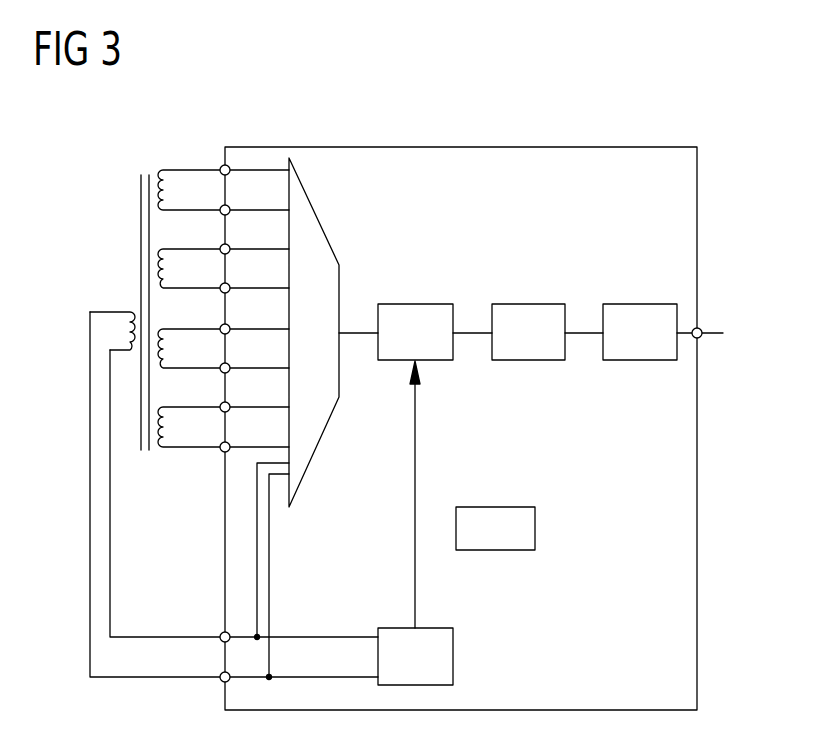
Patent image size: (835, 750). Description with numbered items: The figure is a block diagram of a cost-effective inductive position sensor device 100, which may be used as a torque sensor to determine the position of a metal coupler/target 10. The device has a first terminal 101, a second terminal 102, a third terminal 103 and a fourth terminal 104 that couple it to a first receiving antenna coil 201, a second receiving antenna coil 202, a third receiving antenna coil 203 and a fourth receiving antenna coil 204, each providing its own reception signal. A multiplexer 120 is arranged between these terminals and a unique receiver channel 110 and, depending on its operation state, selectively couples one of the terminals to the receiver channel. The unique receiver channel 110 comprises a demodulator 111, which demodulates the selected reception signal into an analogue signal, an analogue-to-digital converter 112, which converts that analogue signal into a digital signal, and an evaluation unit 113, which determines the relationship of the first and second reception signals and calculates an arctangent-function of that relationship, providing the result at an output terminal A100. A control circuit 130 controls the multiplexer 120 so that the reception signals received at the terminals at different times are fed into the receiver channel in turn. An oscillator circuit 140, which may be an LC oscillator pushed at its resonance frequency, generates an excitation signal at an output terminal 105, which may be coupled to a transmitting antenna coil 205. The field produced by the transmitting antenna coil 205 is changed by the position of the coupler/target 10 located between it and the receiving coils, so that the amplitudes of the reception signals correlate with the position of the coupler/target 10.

The inductive position sensor device 100 is at (697, 128).
The coupler/target 10 is at (145, 172).
The first terminal 101 is at (223, 188).
The second terminal 102 is at (223, 265).
The third terminal 103 is at (223, 345).
The fourth terminal 104 is at (223, 425).
The output terminal 105 is at (220, 655).
The unique receiver channel 110 is at (479, 383).
The demodulator 111 is at (415, 303).
The analogue-to-digital converter 112 is at (528, 303).
The evaluation unit 113 is at (640, 303).
The multiplexer 120 is at (320, 218).
The control circuit 130 is at (535, 525).
The oscillator circuit 140 is at (453, 658).
The first receiving antenna coil 201 is at (160, 195).
The second receiving antenna coil 202 is at (160, 268).
The third receiving antenna coil 203 is at (160, 353).
The fourth receiving antenna coil 204 is at (160, 423).
The transmitting antenna coil 205 is at (128, 333).
The output terminal A100 is at (747, 307).